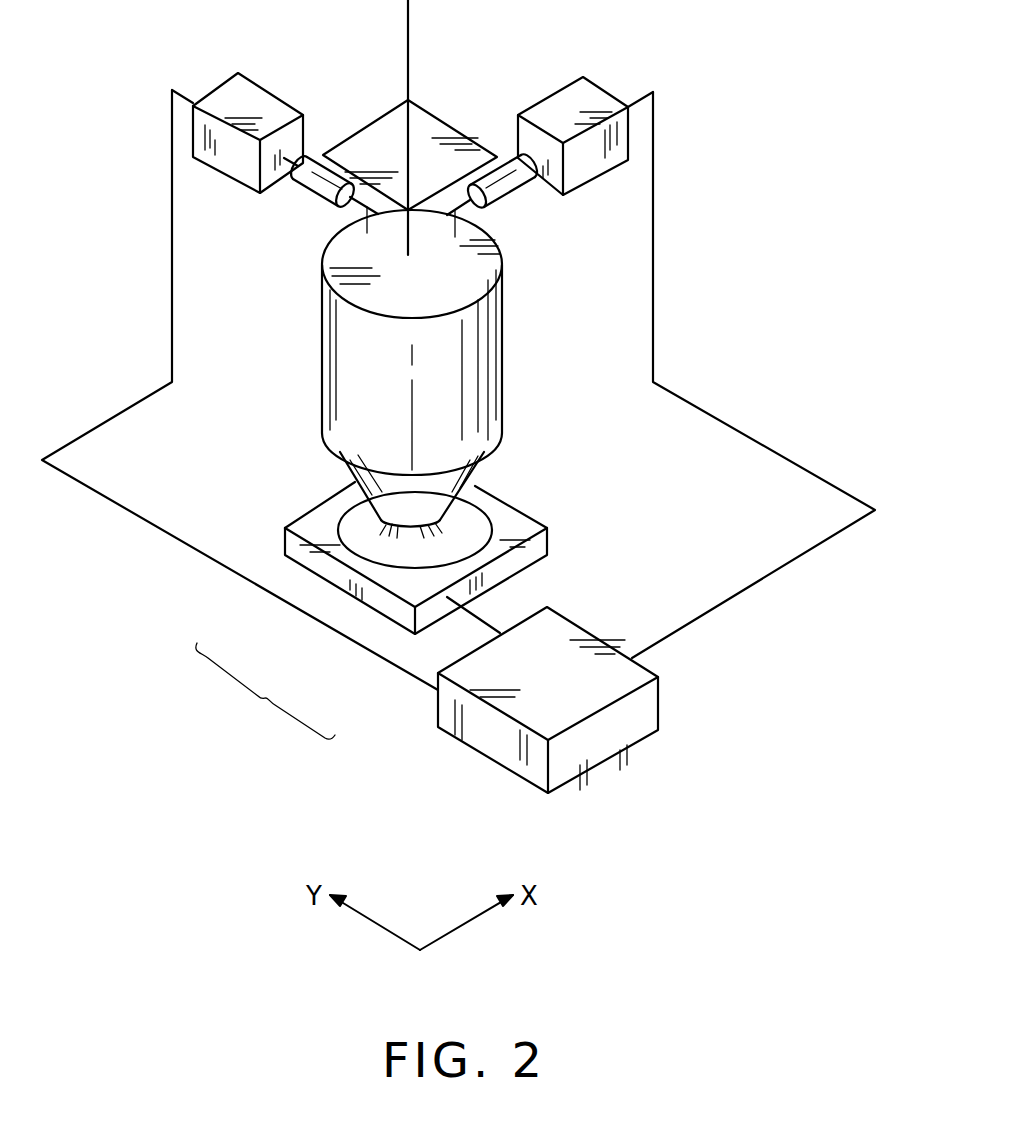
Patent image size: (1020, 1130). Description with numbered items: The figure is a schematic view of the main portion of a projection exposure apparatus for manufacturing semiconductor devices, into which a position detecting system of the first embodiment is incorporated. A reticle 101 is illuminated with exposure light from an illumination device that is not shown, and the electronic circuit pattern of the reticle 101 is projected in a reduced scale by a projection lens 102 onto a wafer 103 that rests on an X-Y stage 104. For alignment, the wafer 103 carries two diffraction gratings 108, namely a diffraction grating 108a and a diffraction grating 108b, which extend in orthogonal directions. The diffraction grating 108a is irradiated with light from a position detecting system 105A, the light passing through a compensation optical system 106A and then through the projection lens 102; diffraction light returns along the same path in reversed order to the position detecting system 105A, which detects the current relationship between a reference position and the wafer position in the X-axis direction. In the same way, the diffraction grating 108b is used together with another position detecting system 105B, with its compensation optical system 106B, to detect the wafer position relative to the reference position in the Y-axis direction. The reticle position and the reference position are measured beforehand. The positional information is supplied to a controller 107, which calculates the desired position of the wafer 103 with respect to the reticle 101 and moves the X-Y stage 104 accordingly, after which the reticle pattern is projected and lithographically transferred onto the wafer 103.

The reticle 101 is at (448, 134).
The projection lens 102 is at (490, 378).
The wafer 103 is at (468, 513).
The X-Y stage 104 is at (546, 541).
The position detecting system 105A is at (600, 97).
The position detecting system 105B is at (268, 108).
The compensation optical system 106A is at (510, 188).
The compensation optical system 106B is at (313, 182).
The controller 107 is at (642, 718).
The diffraction gratings 108 is at (265, 691).
The diffraction grating 108a is at (423, 534).
The diffraction grating 108b is at (390, 531).